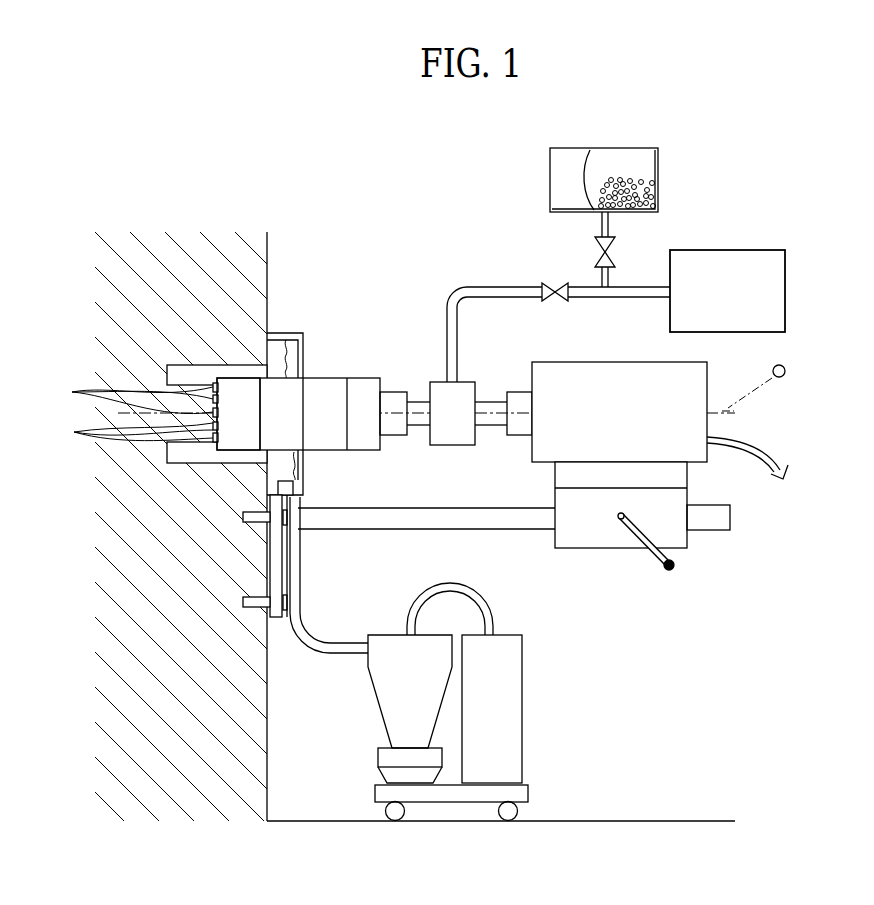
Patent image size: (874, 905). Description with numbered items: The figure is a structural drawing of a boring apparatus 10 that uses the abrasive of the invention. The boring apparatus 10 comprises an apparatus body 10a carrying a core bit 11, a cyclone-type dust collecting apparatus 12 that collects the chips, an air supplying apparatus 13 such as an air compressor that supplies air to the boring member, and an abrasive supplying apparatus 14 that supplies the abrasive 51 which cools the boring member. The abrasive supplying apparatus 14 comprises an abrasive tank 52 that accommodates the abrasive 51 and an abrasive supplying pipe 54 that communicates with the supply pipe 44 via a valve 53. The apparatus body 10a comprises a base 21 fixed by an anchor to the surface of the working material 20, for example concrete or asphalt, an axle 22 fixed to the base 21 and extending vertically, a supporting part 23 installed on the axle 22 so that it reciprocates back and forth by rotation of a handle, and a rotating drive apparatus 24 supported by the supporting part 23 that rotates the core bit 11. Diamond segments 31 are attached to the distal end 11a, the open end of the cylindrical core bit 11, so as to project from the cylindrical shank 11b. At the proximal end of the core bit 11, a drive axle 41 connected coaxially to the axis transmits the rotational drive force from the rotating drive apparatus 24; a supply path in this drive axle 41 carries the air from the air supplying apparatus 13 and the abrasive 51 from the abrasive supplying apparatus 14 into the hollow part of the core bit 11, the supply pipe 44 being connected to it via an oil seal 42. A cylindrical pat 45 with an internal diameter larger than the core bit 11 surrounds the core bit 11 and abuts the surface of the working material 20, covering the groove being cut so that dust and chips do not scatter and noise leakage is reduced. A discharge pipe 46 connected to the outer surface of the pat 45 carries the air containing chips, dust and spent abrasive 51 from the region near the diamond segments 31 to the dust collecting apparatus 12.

The boring apparatus 10 is at (752, 197).
The apparatus body 10a is at (750, 420).
The core bit 11 is at (337, 377).
The distal end 11a is at (236, 378).
The cylindrical shank 11b is at (290, 385).
The dust collecting apparatus 12 is at (545, 655).
The air supplying apparatus 13 is at (785, 287).
The abrasive supplying apparatus 14 is at (550, 177).
The working material 20 is at (270, 235).
The base 21 is at (283, 567).
The axle 22 is at (730, 530).
The supporting part 23 is at (687, 547).
The rotating drive apparatus 24 is at (708, 458).
The diamond segments 31 is at (128, 414).
The drive axle 41 is at (413, 398).
The oil seal 42 is at (457, 445).
The supply pipe 44 is at (487, 287).
The pat 45 is at (310, 471).
The discharge pipe 46 is at (327, 653).
The abrasive 51 is at (630, 177).
The abrasive tank 52 is at (658, 178).
The valve 53 is at (598, 257).
The abrasive supplying pipe 54 is at (600, 228).